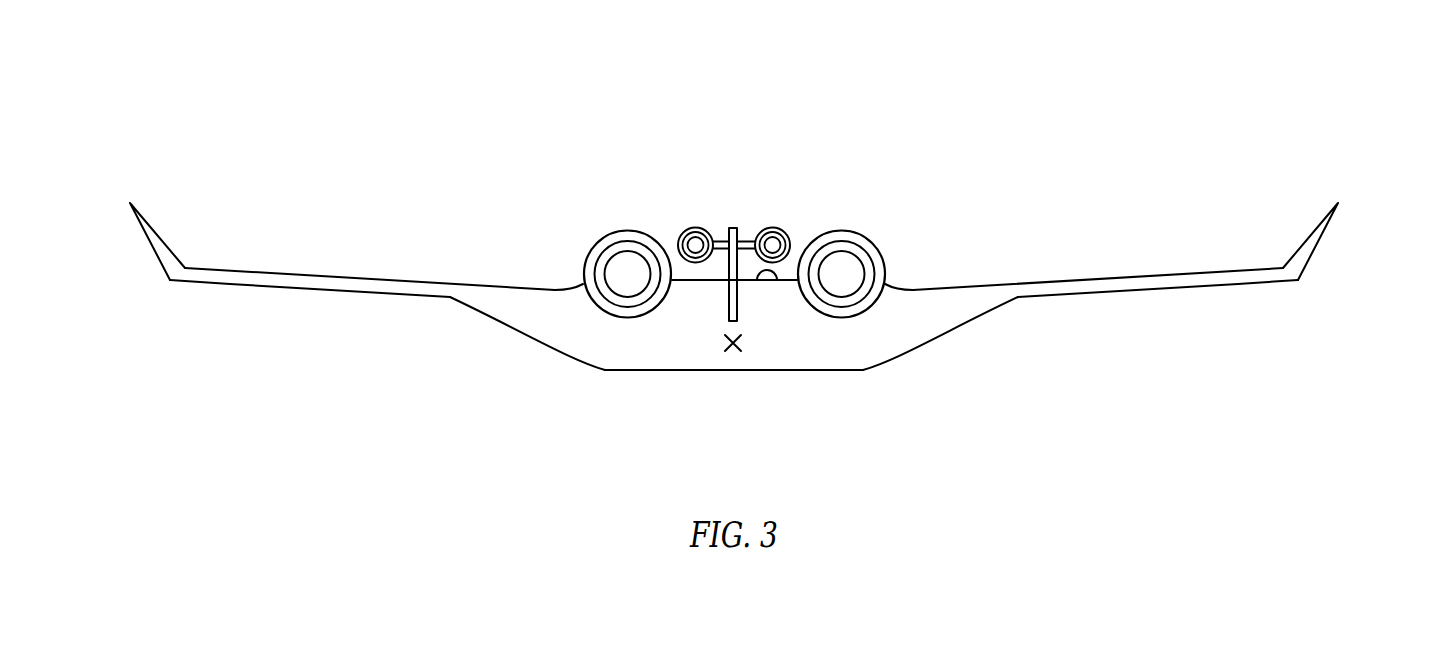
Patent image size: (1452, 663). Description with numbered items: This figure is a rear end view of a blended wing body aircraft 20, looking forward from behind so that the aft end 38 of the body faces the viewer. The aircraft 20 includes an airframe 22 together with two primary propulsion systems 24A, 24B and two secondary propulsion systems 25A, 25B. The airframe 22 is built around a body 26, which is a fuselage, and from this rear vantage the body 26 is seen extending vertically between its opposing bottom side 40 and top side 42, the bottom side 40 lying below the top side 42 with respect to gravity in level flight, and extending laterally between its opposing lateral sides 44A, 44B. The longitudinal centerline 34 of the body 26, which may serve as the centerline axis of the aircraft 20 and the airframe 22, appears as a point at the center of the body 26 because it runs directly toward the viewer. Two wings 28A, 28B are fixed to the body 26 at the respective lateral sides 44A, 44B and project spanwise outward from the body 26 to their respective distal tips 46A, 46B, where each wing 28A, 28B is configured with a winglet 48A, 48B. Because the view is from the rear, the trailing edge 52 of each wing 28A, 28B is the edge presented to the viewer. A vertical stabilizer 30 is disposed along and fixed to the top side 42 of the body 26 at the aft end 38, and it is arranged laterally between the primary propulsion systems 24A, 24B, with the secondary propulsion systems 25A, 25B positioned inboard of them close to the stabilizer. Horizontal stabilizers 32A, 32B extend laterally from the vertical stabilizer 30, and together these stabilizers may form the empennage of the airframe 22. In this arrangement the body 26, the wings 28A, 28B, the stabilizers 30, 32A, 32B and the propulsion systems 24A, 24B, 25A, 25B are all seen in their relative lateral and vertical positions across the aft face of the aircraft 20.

The blended wing body aircraft 20 is at (1085, 118).
The airframe 22 is at (932, 268).
The primary propulsion system 24A is at (868, 220).
The primary propulsion system 24B is at (606, 220).
The secondary propulsion system 25A is at (779, 221).
The secondary propulsion system 25B is at (687, 221).
The body 26 is at (574, 273).
The wing 28A is at (1119, 258).
The wing 28B is at (349, 258).
The vertical stabilizer 30 is at (726, 300).
The horizontal stabilizer 32A is at (747, 240).
The horizontal stabilizer 32B is at (722, 240).
The longitudinal centerline 34 is at (737, 352).
The aft end 38 is at (807, 347).
The bottom side 40 is at (765, 370).
The top side 42 is at (777, 280).
The lateral side 44A is at (913, 350).
The lateral side 44B is at (555, 350).
The distal tip 46A is at (1298, 282).
The distal tip 46B is at (170, 282).
The winglet 48A is at (1323, 255).
The winglet 48B is at (145, 255).
The trailing edge 52 is at (305, 282).